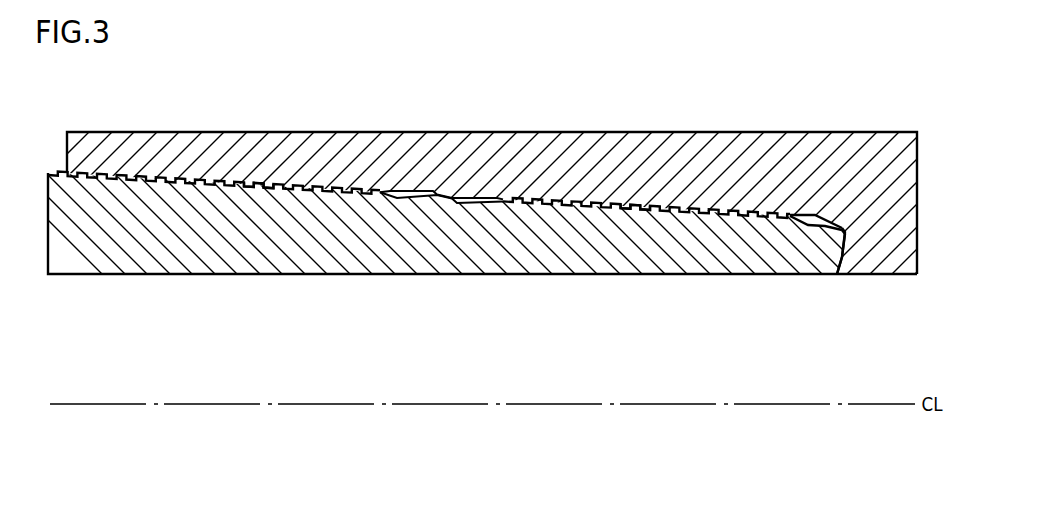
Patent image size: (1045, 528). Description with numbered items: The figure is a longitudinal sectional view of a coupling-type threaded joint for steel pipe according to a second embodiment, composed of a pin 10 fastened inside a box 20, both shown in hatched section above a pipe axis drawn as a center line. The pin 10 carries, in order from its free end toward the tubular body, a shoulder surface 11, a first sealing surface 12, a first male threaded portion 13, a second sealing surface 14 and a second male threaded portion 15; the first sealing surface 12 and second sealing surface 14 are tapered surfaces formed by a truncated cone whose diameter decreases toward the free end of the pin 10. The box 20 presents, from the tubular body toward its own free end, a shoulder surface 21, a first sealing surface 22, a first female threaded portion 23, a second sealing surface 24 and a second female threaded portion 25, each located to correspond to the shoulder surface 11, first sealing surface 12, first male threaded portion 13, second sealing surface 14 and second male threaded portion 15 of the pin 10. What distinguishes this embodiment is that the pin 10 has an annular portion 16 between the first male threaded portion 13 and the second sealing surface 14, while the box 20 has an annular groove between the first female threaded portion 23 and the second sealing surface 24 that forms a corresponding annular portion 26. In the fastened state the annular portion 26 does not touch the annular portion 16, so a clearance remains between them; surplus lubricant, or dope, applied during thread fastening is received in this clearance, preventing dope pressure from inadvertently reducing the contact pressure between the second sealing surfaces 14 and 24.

The pin 10 is at (458, 250).
The shoulder surface 11 is at (834, 258).
The first sealing surface 12 is at (828, 232).
The first male threaded portion 13 is at (638, 210).
The second sealing surface 14 is at (440, 198).
The second male threaded portion 15 is at (254, 190).
The annular portion 16 is at (473, 203).
The box 20 is at (522, 207).
The shoulder surface 21 is at (838, 265).
The first sealing surface 22 is at (820, 216).
The first female threaded portion 23 is at (639, 206).
The second sealing surface 24 is at (438, 190).
The second female threaded portion 25 is at (260, 182).
The annular portion 26 is at (468, 196).